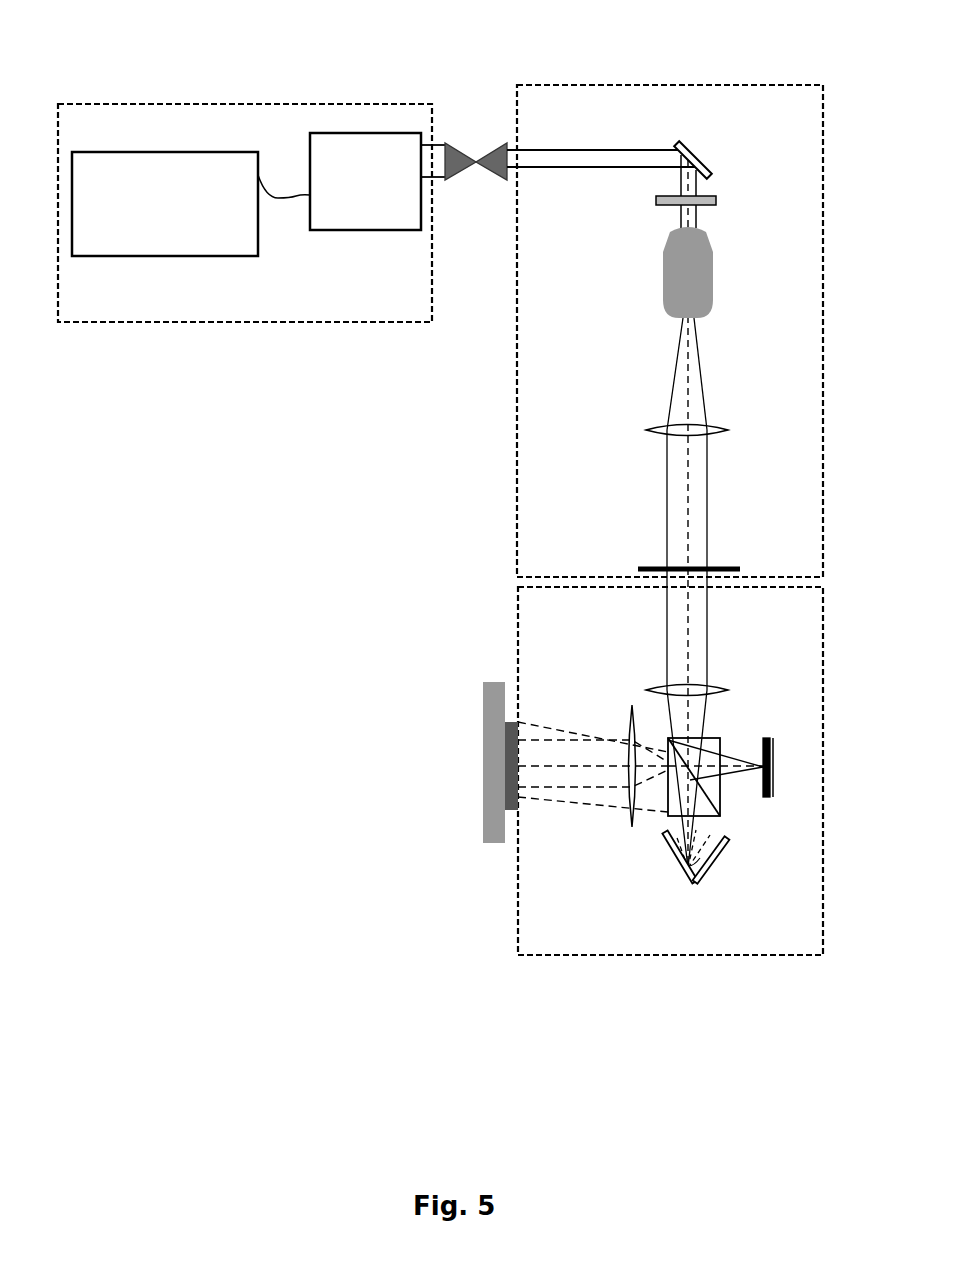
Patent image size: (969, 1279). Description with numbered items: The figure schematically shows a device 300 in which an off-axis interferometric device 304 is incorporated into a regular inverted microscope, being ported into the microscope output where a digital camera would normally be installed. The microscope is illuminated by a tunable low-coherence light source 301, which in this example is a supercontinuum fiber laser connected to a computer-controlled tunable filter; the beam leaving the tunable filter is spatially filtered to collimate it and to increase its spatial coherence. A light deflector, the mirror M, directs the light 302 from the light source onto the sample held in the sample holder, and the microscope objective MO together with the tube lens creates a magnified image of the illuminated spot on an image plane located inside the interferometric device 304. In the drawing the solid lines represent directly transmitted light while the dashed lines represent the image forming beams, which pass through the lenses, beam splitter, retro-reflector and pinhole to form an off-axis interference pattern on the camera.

The device 300 is at (218, 68).
The light source 301 is at (222, 330).
The light 302 is at (545, 145).
The interferometric device 304 is at (830, 722).